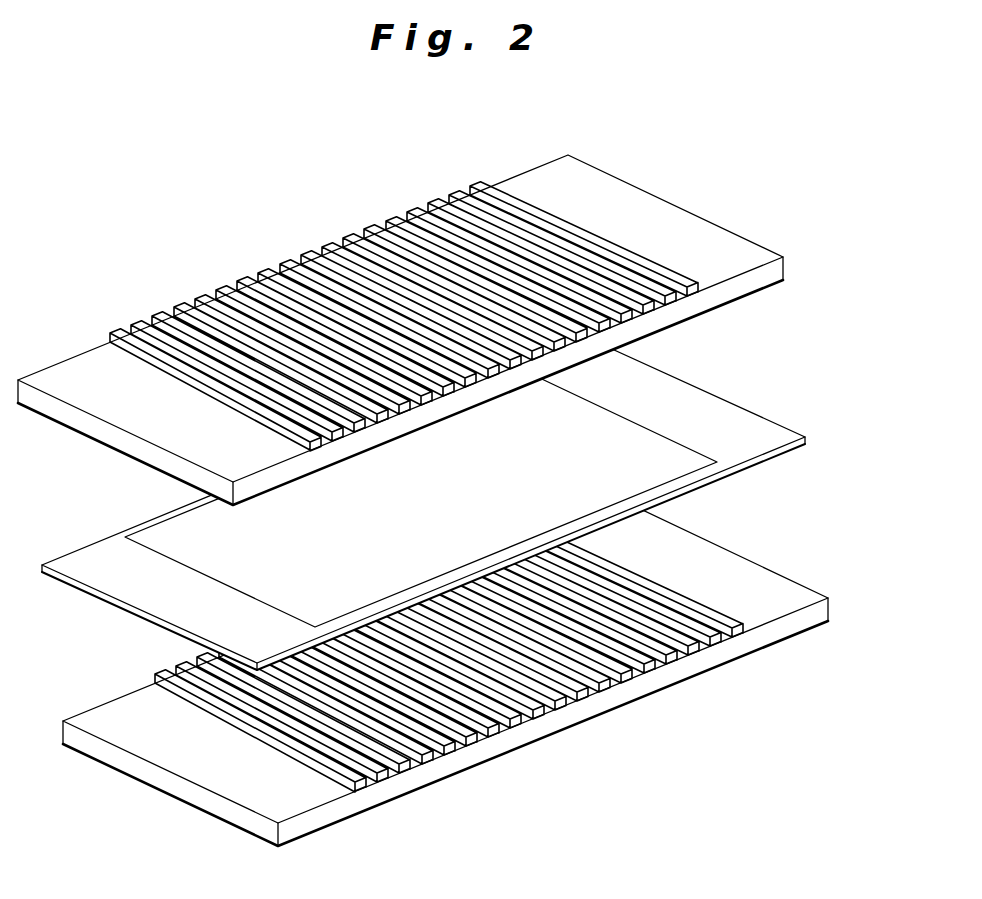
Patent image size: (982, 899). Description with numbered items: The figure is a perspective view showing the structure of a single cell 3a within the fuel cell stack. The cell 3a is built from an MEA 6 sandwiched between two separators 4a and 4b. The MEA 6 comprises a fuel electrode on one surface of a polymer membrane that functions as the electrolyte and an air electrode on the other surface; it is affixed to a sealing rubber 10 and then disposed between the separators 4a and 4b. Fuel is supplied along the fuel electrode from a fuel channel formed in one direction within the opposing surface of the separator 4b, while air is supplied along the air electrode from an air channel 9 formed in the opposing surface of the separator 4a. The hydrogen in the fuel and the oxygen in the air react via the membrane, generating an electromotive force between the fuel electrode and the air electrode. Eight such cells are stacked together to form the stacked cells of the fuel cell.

The cell 3a is at (817, 303).
The separator 4a is at (782, 565).
The separator 4b is at (702, 212).
The MEA 6 is at (607, 450).
The air channel 9 is at (520, 688).
The sealing rubber 10 is at (460, 504).